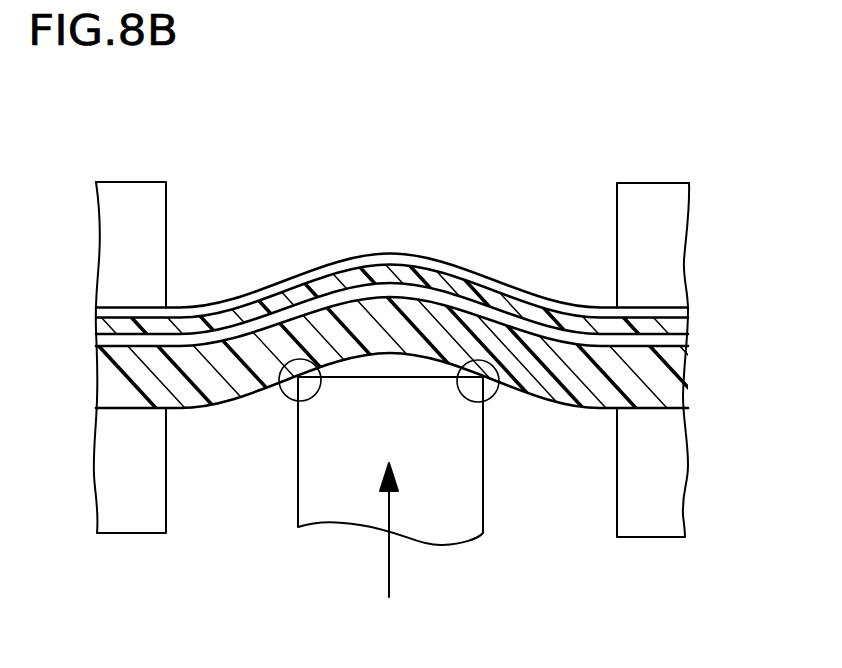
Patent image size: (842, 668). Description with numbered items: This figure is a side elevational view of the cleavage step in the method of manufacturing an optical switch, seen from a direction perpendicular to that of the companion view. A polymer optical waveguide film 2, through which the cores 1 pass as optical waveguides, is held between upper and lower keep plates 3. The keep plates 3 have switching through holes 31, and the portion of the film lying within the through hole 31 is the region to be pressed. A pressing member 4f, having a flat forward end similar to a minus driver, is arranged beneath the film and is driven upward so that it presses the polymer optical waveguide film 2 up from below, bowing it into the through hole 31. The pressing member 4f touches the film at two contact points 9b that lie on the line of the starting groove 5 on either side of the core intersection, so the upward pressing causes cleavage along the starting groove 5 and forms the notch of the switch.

The core 1 is at (327, 296).
The polymer optical waveguide film 2 is at (377, 301).
The keep plate 3 is at (653, 208).
The switching through hole 31 is at (222, 252).
The pressing member 4f is at (340, 503).
The starting groove 5 is at (290, 283).
The contact point 9b is at (293, 400).